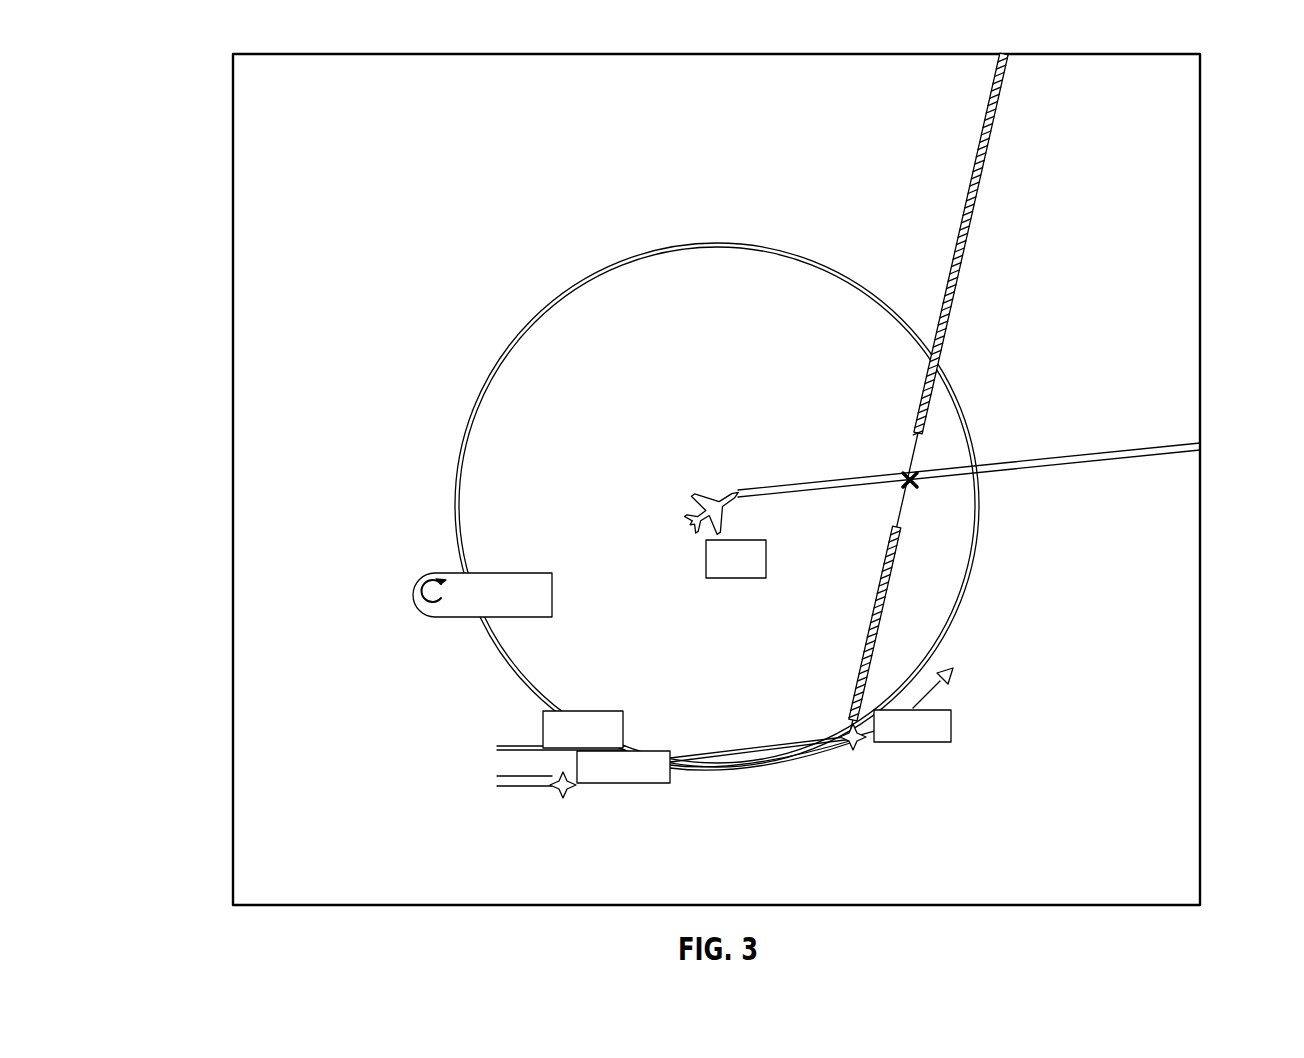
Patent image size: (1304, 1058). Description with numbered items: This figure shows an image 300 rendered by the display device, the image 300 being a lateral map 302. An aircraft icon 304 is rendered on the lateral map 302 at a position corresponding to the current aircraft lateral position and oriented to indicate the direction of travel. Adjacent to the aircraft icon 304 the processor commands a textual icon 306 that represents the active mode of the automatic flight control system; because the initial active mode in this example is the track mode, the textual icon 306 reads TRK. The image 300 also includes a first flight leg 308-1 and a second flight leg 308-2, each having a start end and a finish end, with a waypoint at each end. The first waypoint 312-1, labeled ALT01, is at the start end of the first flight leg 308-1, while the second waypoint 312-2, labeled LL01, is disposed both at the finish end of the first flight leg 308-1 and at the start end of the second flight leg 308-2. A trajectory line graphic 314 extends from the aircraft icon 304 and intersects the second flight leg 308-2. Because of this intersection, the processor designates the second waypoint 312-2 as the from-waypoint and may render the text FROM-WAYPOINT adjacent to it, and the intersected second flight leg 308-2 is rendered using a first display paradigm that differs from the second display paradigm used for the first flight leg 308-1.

The image 300 is at (187, 77).
The lateral map 302 is at (738, 134).
The aircraft icon 304 is at (702, 490).
The textual icon 306 is at (706, 558).
The first flight leg 308-1 is at (775, 745).
The second flight leg 308-2 is at (968, 247).
The first waypoint 312-1 is at (563, 796).
The second waypoint 312-2 is at (853, 752).
The trajectory line graphic 314 is at (812, 487).